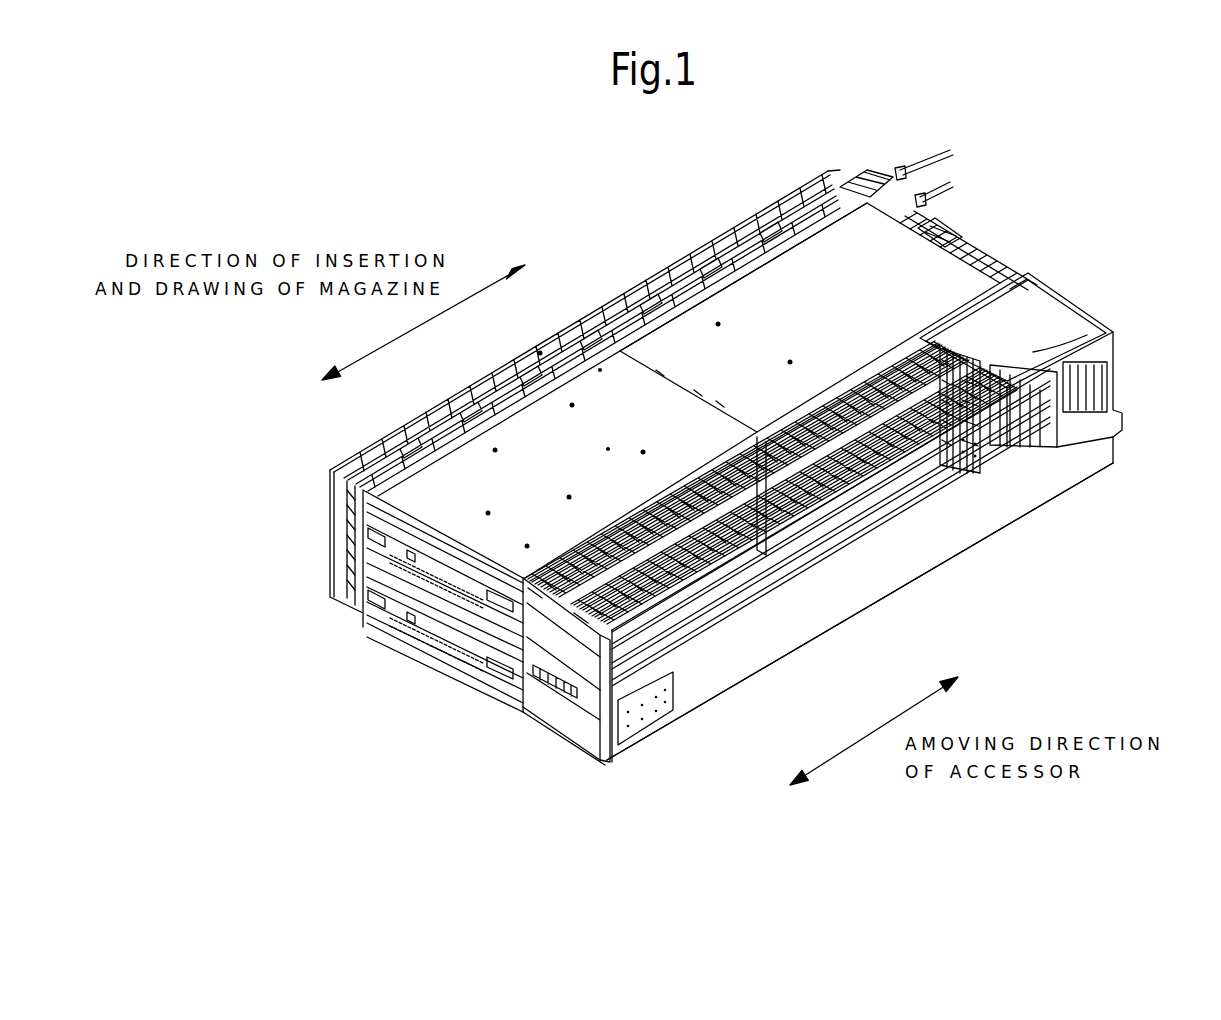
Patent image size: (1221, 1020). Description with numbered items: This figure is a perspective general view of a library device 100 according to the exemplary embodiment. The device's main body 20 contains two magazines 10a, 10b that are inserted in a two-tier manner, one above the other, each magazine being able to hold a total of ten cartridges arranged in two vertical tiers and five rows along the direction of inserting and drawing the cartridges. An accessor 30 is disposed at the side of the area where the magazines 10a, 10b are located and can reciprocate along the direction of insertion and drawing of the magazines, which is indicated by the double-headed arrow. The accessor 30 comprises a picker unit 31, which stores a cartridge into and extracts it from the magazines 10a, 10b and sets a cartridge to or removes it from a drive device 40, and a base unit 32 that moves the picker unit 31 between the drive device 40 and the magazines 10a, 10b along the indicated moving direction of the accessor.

The library device 100 is at (588, 238).
The magazine 10a is at (362, 548).
The magazine 10b is at (437, 633).
The main body 20 is at (787, 638).
The accessor 30 is at (1025, 356).
The picker unit 31 is at (1050, 428).
The base unit 32 is at (960, 488).
The drive device 40 is at (933, 263).